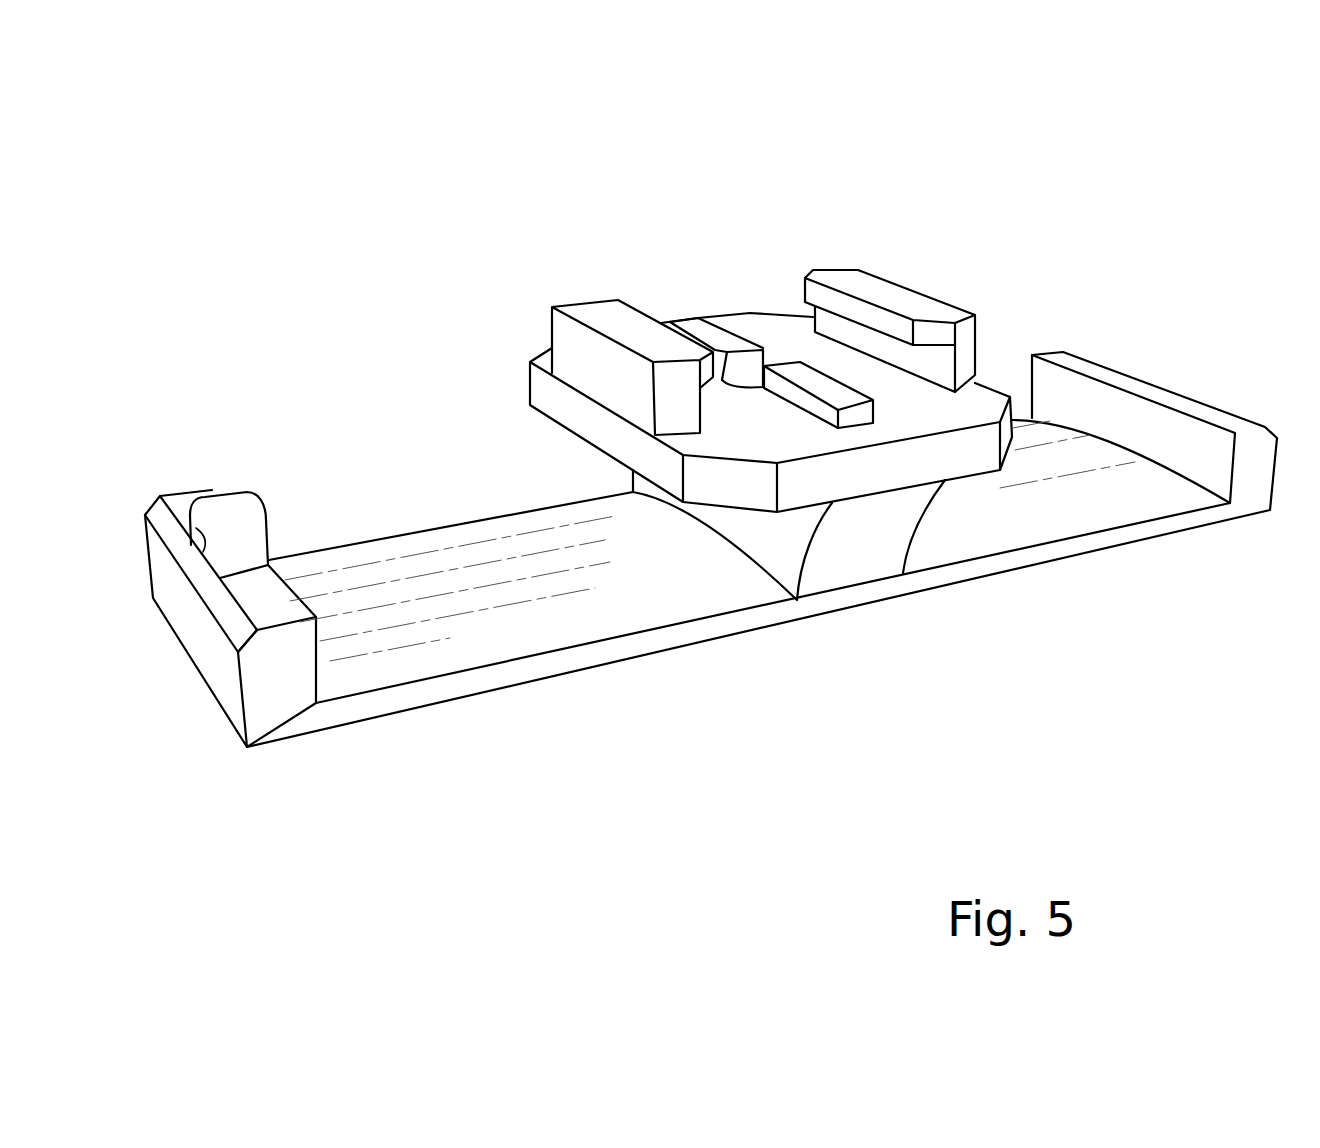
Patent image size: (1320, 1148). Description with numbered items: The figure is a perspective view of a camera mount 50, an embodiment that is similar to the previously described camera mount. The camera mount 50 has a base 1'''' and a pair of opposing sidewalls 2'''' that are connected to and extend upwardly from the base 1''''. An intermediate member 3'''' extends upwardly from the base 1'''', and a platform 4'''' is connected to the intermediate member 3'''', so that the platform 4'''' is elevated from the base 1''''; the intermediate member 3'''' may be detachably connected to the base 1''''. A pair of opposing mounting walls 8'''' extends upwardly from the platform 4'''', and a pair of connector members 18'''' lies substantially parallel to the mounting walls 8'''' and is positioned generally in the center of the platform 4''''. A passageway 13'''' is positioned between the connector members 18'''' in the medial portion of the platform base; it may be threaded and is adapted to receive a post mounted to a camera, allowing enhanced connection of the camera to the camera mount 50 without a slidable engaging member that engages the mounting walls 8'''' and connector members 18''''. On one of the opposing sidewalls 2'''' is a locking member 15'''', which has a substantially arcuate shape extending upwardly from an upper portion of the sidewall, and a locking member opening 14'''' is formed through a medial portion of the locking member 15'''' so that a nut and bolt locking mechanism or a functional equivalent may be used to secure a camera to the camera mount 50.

The camera mount 50 is at (250, 165).
The base 1'''' is at (758, 587).
The opposing sidewalls 2'''' is at (711, 541).
The intermediate member 3'''' is at (896, 609).
The platform 4'''' is at (732, 596).
The opposing mounting walls 8'''' is at (740, 313).
The passageway 13'''' is at (757, 283).
The locking member opening 14'''' is at (151, 625).
The locking member 15'''' is at (236, 464).
The connector members 18'''' is at (856, 439).